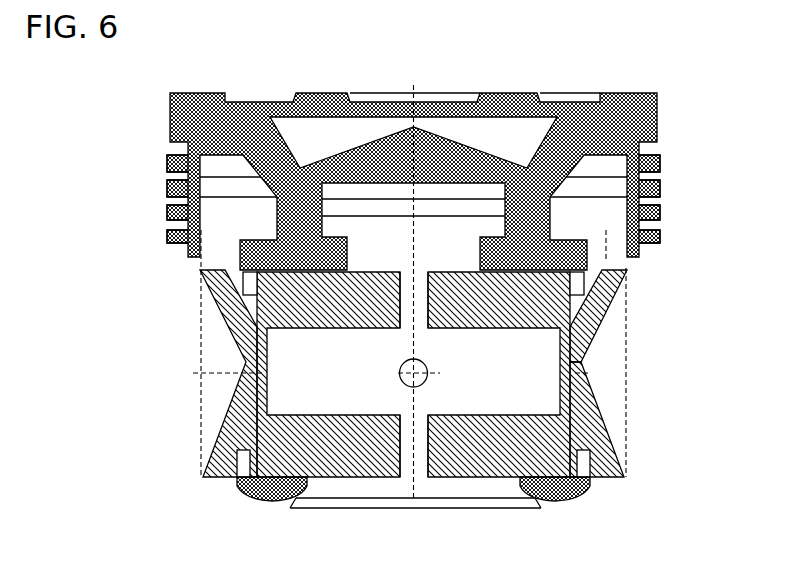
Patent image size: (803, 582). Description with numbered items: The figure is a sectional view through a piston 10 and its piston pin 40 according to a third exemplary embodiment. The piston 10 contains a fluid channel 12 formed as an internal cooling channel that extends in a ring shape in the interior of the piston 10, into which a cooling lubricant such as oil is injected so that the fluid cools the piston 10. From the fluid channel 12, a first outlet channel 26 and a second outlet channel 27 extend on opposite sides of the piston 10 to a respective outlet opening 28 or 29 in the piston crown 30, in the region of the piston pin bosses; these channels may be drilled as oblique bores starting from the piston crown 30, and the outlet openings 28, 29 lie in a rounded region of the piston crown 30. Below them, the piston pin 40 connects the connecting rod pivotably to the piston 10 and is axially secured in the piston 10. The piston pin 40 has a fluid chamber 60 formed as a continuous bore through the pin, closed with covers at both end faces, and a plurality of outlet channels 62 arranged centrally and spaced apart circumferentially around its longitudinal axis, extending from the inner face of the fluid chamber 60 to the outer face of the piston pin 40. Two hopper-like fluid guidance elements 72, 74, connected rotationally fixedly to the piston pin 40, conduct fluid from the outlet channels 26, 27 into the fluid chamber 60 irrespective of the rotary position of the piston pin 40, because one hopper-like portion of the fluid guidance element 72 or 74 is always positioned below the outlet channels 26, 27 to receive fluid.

The piston 10 is at (168, 125).
The fluid channel 12 is at (167, 167).
The first outlet channel 26 is at (200, 257).
The second outlet channel 27 is at (638, 258).
The outlet opening 28 is at (203, 262).
The outlet opening 29 is at (627, 273).
The piston crown 30 is at (400, 374).
The piston pin 40 is at (573, 497).
The fluid chamber 60 is at (612, 398).
The outlet channels 62 is at (395, 290).
The fluid guidance element 72 is at (213, 327).
The fluid guidance element 74 is at (615, 352).